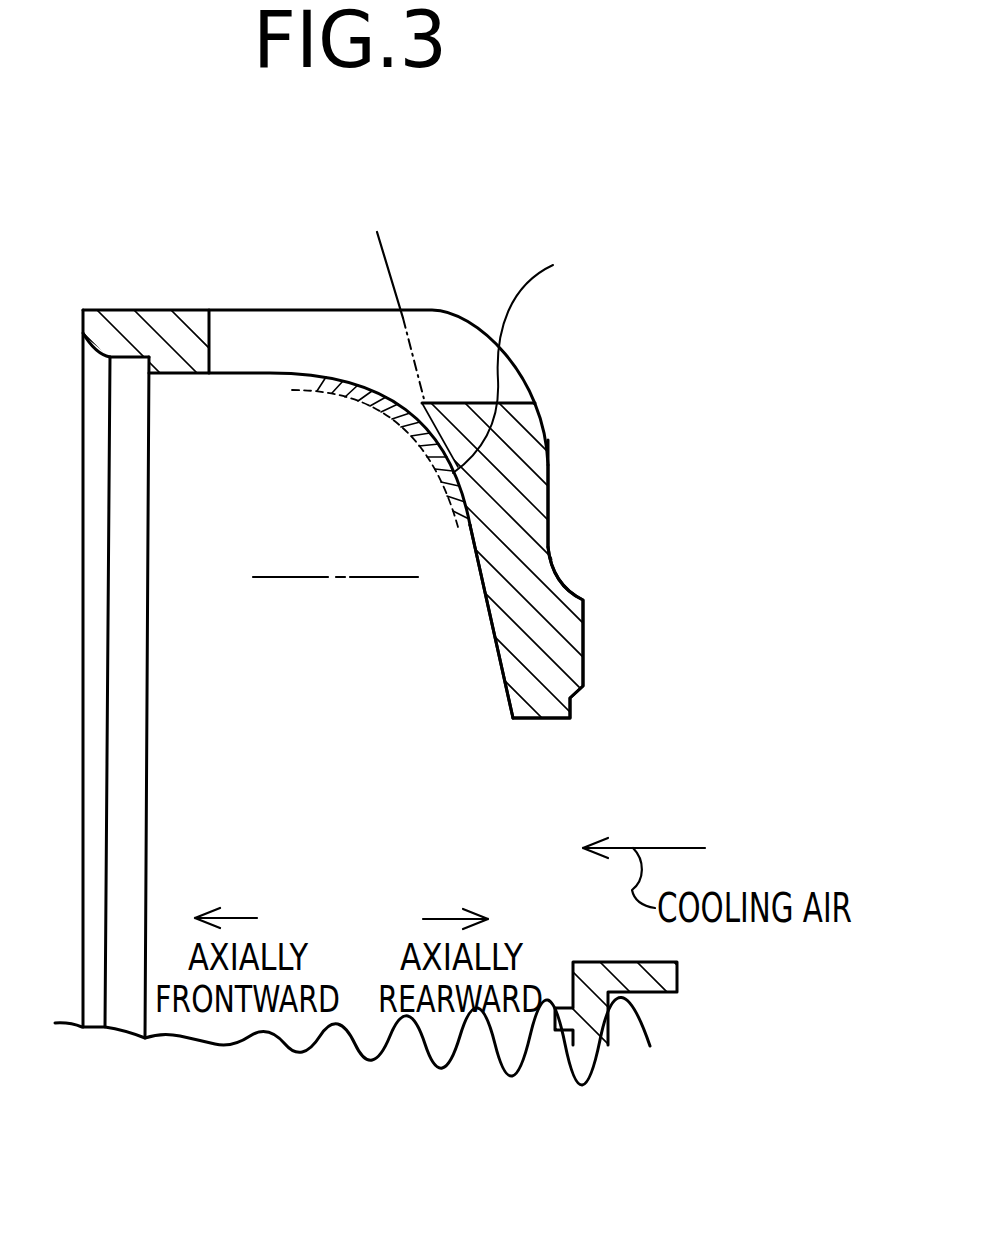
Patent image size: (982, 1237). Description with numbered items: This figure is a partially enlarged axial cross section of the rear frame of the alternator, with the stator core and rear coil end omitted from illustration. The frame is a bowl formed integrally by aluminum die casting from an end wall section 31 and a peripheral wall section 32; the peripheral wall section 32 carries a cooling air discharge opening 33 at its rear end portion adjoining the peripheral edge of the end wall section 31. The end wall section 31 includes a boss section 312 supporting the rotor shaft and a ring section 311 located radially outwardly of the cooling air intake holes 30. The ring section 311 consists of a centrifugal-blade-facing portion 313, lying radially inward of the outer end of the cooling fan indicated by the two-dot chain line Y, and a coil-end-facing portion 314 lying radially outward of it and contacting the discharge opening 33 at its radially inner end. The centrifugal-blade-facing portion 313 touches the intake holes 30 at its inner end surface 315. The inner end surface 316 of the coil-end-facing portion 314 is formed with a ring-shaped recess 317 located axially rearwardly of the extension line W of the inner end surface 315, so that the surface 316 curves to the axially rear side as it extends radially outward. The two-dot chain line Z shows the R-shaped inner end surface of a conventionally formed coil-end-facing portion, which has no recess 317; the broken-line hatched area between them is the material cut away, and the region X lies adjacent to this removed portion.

The cooling air intake holes 30 is at (542, 792).
The end wall section 31 is at (574, 470).
The ring section 311 is at (574, 510).
The boss section 312 is at (677, 975).
The centrifugal-blade-facing portion 313 is at (567, 660).
The coil-end-facing portion 314 is at (523, 432).
The inner end surface of the centrifugal-blade-facing portion 315 is at (510, 667).
The inner end surface of the coil-end-facing portion 316 is at (538, 351).
The ring-shaped recess 317 is at (462, 515).
The peripheral wall section 32 is at (163, 322).
The cooling air discharge opening 33 is at (300, 320).
The extension line W is at (388, 268).
The region X is at (415, 505).
The two-dot chain line Y is at (292, 580).
The two-dot chain line Z is at (333, 392).